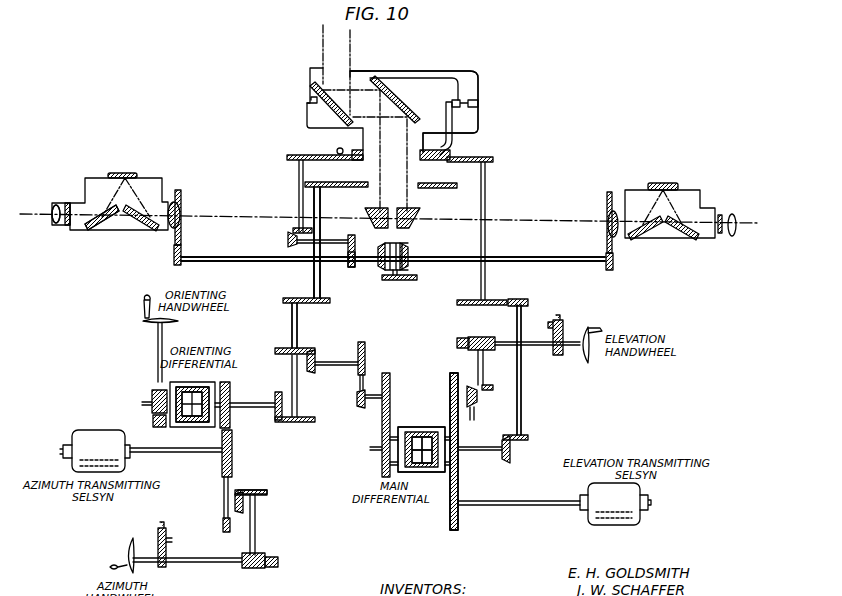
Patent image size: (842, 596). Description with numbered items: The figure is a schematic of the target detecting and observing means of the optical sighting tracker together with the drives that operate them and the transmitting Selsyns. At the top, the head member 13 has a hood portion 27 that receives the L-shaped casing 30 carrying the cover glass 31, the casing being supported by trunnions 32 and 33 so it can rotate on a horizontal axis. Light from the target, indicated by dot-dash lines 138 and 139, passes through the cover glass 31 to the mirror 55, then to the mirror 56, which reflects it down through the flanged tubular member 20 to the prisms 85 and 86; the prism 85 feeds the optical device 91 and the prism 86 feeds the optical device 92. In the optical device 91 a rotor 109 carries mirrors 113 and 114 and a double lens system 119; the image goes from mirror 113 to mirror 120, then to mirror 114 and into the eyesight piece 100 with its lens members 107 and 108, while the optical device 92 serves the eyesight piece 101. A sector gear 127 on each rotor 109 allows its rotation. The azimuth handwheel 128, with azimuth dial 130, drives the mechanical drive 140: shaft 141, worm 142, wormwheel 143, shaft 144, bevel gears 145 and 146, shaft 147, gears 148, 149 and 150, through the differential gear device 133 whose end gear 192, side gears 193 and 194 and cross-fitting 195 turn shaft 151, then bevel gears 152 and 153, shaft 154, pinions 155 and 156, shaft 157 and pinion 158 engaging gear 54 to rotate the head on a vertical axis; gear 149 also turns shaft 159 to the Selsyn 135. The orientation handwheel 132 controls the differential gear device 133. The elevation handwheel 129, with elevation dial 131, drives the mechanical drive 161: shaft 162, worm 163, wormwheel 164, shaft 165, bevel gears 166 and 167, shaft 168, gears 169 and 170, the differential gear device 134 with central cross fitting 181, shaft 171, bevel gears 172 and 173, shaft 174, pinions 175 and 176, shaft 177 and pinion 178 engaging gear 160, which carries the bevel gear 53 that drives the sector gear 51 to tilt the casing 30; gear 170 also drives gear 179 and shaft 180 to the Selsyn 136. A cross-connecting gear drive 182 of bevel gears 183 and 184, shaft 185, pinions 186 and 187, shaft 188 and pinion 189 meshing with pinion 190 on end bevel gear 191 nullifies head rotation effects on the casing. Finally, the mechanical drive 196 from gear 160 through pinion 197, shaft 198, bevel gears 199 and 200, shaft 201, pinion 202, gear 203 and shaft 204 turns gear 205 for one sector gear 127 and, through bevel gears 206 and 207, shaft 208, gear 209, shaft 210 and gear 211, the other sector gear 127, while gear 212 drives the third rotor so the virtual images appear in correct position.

The head member 13 is at (443, 71).
The flanged tubular member 20 is at (360, 160).
The hood portion 27 is at (432, 71).
The L-shaped casing 30 is at (309, 68).
The cover glass 31 is at (355, 71).
The trunnion 32 is at (306, 100).
The trunnion 33 is at (476, 100).
The sector gear 51 is at (455, 145).
The bevel gear 53 is at (336, 149).
The gear 54 is at (452, 190).
The mirror 55 is at (309, 83).
The mirror 56 is at (392, 90).
The prism 85 is at (368, 208).
The prism 86 is at (414, 208).
The optical device 91 is at (150, 178).
The optical device 92 is at (638, 190).
The eyesight piece 100 is at (66, 228).
The eyesight piece 101 is at (731, 214).
The lens member 107 is at (67, 203).
The lens member 108 is at (53, 206).
The rotor 109 is at (85, 228).
The mirror 113 is at (140, 222).
The mirror 114 is at (103, 226).
The double lens system 119 is at (181, 210).
The mirror 120 is at (130, 173).
The sector gear 127 is at (181, 240).
The azimuth handwheel 128 is at (124, 548).
The elevation handwheel 129 is at (589, 358).
The azimuth dial 130 is at (160, 528).
The elevation dial 131 is at (563, 318).
The orientation handwheel 132 is at (143, 321).
The differential gear device 133 is at (212, 384).
The differential gear device 134 is at (415, 428).
The Selsyn device 135 is at (100, 430).
The Selsyn device 136 is at (622, 526).
The dot-dash line 138 is at (322, 37).
The dot-dash line 139 is at (351, 46).
The mechanical drive 140 is at (313, 272).
The shaft 141 is at (190, 563).
The worm 142 is at (248, 569).
The wormwheel 143 is at (268, 557).
The shaft 144 is at (256, 517).
The bevel gear 145 is at (268, 495).
The bevel gear 146 is at (232, 528).
The shaft 147 is at (239, 492).
The gear 148 is at (223, 492).
The gear 149 is at (233, 444).
The gear 150 is at (231, 392).
The shaft 151 is at (258, 408).
The bevel gear 152 is at (280, 392).
The bevel gear 153 is at (300, 417).
The shaft 154 is at (298, 387).
The pinion 155 is at (296, 303).
The pinion 156 is at (293, 304).
The shaft 157 is at (320, 285).
The pinion 158 is at (318, 182).
The shaft 159 is at (178, 453).
The gear 160 is at (440, 161).
The mechanical drive 161 is at (488, 244).
The shaft 162 is at (537, 346).
The worm 163 is at (478, 337).
The wormwheel 164 is at (460, 338).
The shaft 165 is at (484, 375).
The bevel gear 166 is at (488, 390).
The bevel gear 167 is at (478, 400).
The shaft 168 is at (473, 418).
The gear 169 is at (455, 374).
The gear 170 is at (459, 464).
The shaft 171 is at (502, 458).
The bevel gear 172 is at (511, 449).
The bevel gear 173 is at (528, 437).
The shaft 174 is at (522, 398).
The pinion 175 is at (519, 299).
The pinion 176 is at (478, 300).
The shaft 177 is at (486, 196).
The pinion 178 is at (493, 158).
The gear 179 is at (459, 492).
The shaft 180 is at (513, 506).
The central cross fitting 181 is at (428, 428).
The cross-connecting gear drive 182 is at (365, 382).
The bevel gear 183 is at (298, 333).
The bevel gear 184 is at (316, 356).
The shaft 185 is at (345, 368).
The pinion 186 is at (365, 358).
The pinion 187 is at (356, 404).
The shaft 188 is at (375, 400).
The pinion 189 is at (391, 393).
The pinion 190 is at (380, 462).
The end bevel gear 191 is at (398, 474).
The end gear 192 is at (160, 427).
The side gear 193 is at (160, 380).
The side gear 194 is at (182, 426).
The cross-fitting 195 is at (202, 426).
The mechanical drive 196 is at (243, 263).
The pinion 197 is at (292, 155).
The shaft 198 is at (298, 180).
The bevel gear 199 is at (292, 230).
The bevel gear 200 is at (287, 242).
The shaft 201 is at (321, 240).
The pinion 202 is at (356, 242).
The gear 203 is at (348, 263).
The shaft 204 is at (218, 256).
The gear 205 is at (181, 259).
The bevel gear 206 is at (379, 268).
The bevel gear 207 is at (402, 236).
The shaft 208 is at (388, 281).
The gear 209 is at (410, 254).
The shaft 210 is at (520, 257).
The gear 211 is at (613, 260).
The gear 212 is at (397, 281).